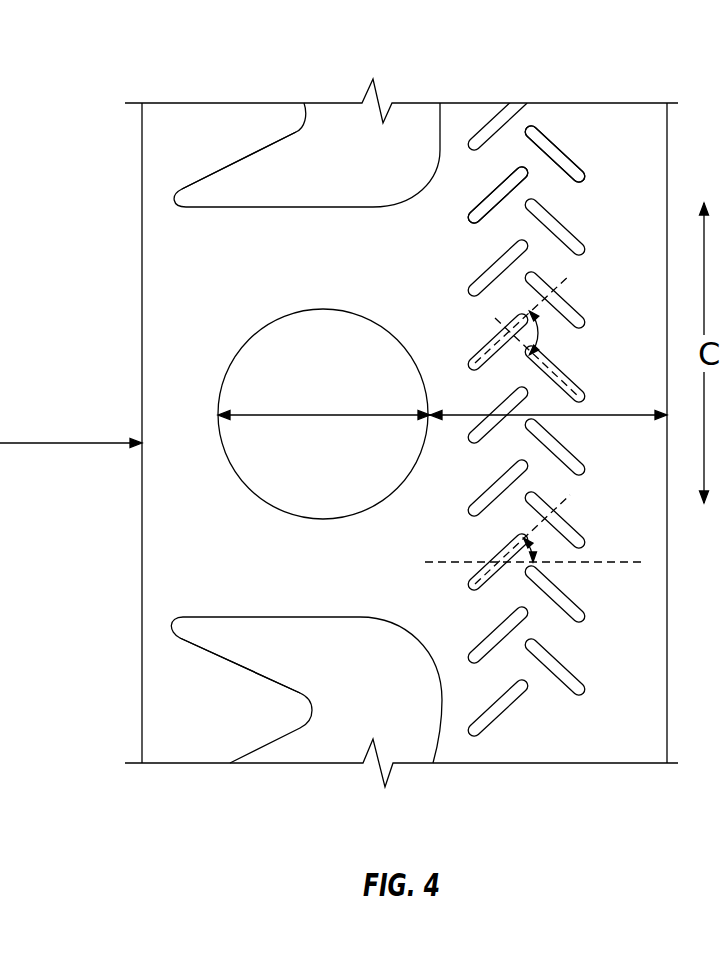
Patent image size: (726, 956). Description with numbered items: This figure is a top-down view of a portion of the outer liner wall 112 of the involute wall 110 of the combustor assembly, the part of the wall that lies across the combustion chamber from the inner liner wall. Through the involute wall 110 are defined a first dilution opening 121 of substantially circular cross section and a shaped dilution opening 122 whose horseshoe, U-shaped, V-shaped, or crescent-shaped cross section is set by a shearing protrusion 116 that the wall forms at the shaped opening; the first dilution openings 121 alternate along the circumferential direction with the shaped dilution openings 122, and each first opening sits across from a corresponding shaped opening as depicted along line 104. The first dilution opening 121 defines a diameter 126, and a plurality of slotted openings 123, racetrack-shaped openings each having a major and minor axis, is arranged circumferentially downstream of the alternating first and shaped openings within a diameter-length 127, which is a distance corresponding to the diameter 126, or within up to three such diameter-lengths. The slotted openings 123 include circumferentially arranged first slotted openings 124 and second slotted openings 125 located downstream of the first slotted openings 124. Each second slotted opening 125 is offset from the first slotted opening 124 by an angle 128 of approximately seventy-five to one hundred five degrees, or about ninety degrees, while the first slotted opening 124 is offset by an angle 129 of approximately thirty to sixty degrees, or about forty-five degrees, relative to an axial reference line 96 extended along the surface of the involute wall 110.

The axial reference line 96 is at (578, 563).
The line 104 is at (67, 443).
The involute wall 110 is at (175, 107).
The outer liner wall 112 is at (160, 552).
The shearing protrusion 116 is at (297, 142).
The first dilution opening 121 is at (353, 304).
The shaped dilution opening 122 is at (301, 212).
The slotted openings 123 is at (536, 93).
The first slotted opening 124 is at (494, 179).
The second slotted opening 125 is at (571, 153).
The diameter 126 is at (313, 413).
The diameter-length 127 is at (592, 417).
The angle 128 is at (538, 336).
The angle 129 is at (533, 549).